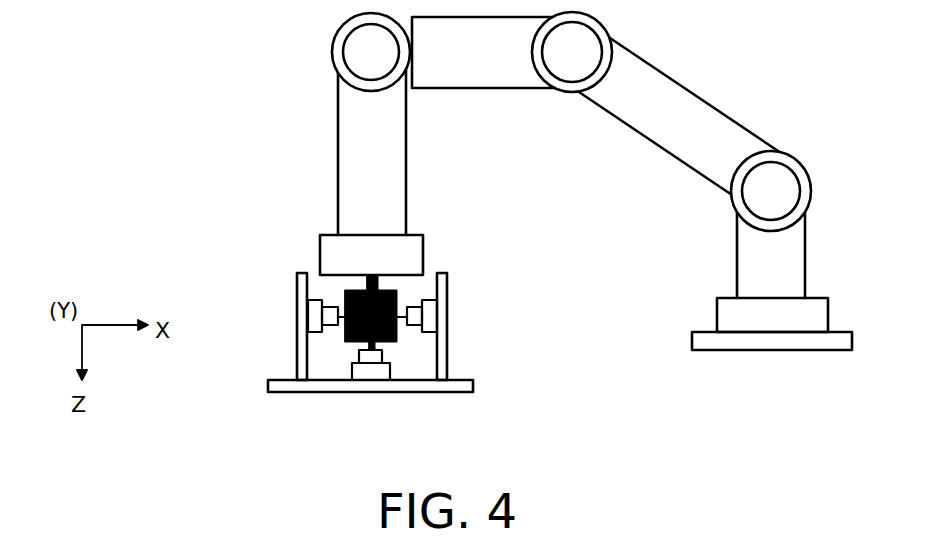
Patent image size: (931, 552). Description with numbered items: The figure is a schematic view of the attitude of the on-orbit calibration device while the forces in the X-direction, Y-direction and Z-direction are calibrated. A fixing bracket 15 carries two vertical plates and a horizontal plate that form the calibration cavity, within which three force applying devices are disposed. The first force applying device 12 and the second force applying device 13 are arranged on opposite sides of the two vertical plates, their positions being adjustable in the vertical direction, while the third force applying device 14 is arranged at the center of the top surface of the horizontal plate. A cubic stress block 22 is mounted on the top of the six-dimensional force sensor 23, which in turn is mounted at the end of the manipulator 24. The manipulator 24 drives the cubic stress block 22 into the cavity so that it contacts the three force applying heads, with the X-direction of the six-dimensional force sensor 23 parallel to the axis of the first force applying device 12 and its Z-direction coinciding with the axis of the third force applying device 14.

The first force applying device 12 is at (313, 317).
The second force applying device 13 is at (430, 315).
The third force applying device 14 is at (373, 367).
The fixing bracket 15 is at (473, 387).
The cubic stress block 22 is at (345, 298).
The six-dimensional force sensor 23 is at (370, 255).
The manipulator 24 is at (372, 120).